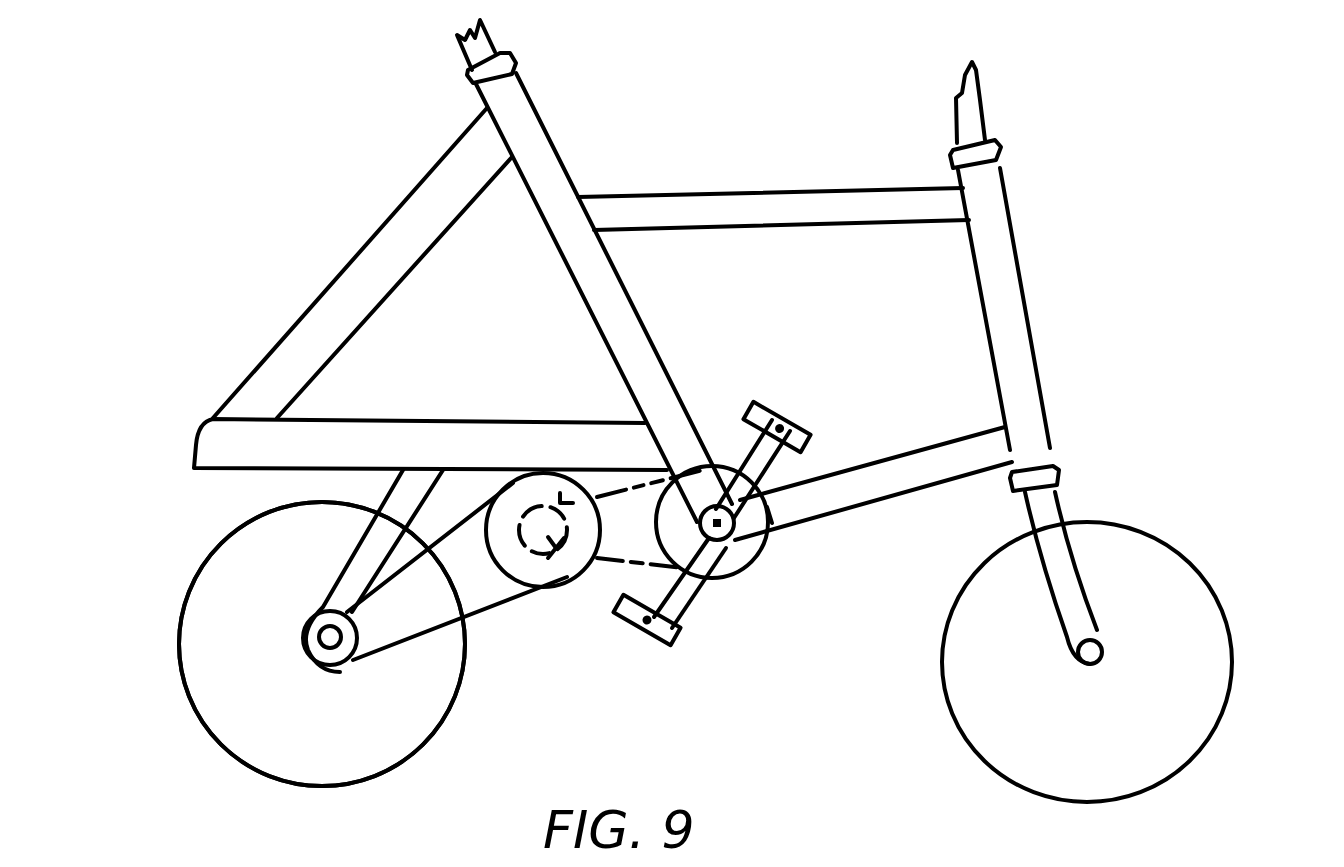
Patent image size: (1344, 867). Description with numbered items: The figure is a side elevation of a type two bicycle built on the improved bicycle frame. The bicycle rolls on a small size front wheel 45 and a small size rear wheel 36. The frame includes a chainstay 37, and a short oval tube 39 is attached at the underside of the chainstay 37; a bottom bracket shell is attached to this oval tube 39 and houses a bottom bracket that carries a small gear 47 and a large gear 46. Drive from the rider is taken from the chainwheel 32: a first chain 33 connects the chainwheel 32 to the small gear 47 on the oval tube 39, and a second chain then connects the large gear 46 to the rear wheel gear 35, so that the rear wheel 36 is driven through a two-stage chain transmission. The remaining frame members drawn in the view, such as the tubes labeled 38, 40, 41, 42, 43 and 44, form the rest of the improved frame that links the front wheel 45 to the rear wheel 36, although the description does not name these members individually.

The chainwheel 32 is at (747, 570).
The first chain 33 is at (607, 573).
The rear wheel gear 35 is at (297, 640).
The rear wheel 36 is at (193, 712).
The chainstay 37 is at (532, 424).
The rear stay and wheel 38 is at (257, 515).
The short oval tube 39 is at (535, 507).
The diagonal top tube 40 is at (343, 256).
The top tube 41 is at (720, 196).
The seat tube 42 is at (657, 362).
The down tube 43 is at (889, 437).
The head tube 44 is at (1027, 318).
The front wheel 45 is at (1237, 642).
The large gear 46 is at (533, 560).
The small gear 47 is at (560, 557).